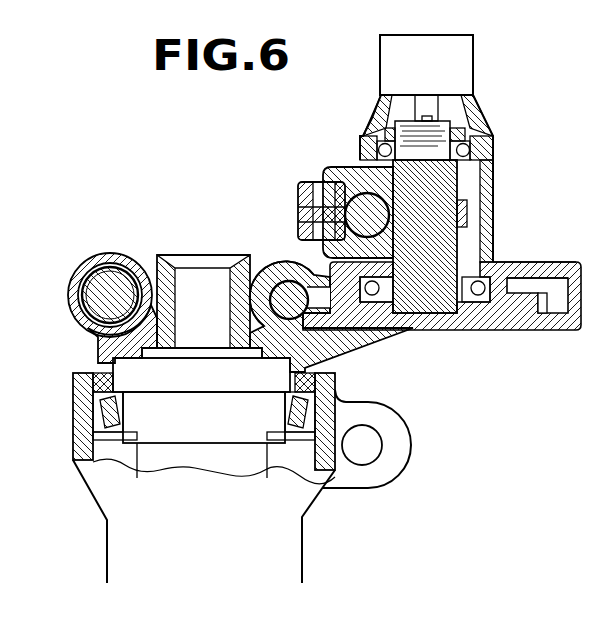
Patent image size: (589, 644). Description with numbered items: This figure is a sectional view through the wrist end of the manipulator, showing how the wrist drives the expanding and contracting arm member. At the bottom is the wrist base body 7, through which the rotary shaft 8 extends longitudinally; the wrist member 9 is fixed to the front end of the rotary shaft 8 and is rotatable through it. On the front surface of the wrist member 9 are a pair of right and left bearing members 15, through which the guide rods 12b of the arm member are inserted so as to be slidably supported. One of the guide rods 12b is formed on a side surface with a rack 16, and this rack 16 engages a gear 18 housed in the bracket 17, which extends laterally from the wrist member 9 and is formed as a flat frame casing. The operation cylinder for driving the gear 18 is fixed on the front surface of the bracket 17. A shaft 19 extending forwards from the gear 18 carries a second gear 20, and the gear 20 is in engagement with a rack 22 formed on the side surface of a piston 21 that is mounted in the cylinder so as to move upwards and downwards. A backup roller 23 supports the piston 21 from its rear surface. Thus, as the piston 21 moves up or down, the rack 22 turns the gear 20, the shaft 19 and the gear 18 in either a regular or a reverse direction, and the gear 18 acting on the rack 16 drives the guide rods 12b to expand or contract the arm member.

The wrist base body 7 is at (120, 543).
The rotary shaft 8 is at (153, 458).
The wrist member 9 is at (72, 328).
The guide rod 12b is at (108, 280).
The bearing member 15 is at (68, 301).
The rack 16 is at (356, 333).
The bracket 17 is at (553, 330).
The gear 18 is at (551, 272).
The shaft 19 is at (443, 250).
The gear 20 is at (462, 212).
The piston 21 is at (357, 205).
The rack 22 is at (390, 233).
The backup roller 23 is at (307, 213).